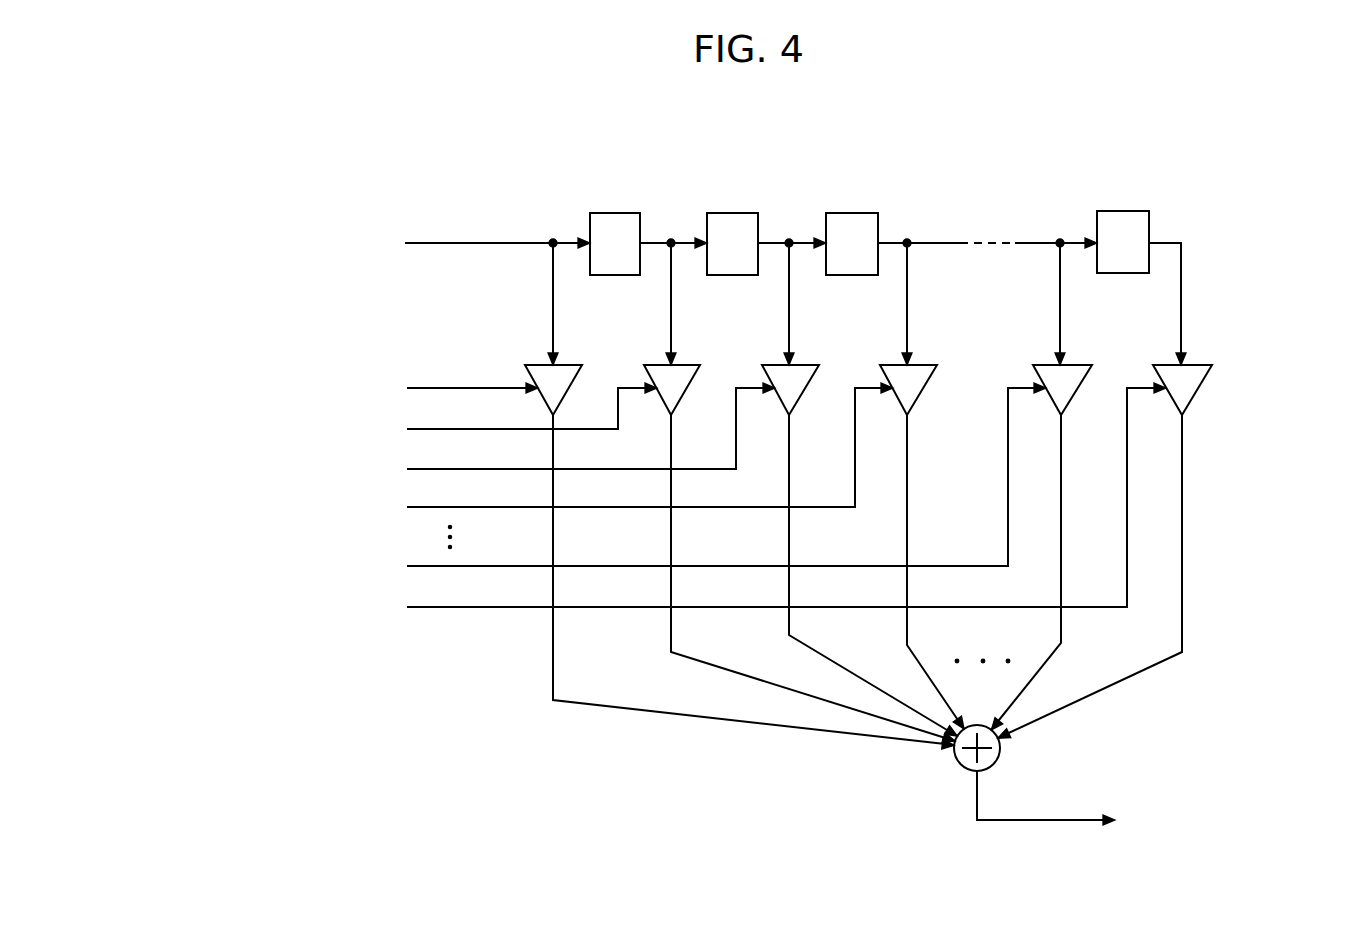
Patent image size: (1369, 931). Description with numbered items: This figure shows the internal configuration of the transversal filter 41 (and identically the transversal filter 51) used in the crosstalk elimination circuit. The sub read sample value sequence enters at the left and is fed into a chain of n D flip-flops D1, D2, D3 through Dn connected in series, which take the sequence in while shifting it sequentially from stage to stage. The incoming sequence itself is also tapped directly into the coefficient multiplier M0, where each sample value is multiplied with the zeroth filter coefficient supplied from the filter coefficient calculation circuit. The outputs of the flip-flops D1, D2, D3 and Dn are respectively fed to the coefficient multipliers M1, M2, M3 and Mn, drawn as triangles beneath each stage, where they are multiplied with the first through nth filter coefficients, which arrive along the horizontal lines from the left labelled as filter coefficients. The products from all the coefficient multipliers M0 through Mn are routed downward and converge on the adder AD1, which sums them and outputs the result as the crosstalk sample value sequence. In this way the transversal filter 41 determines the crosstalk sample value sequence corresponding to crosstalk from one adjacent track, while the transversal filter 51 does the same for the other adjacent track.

The transversal filter 41 is at (648, 128).
The transversal filter 51 is at (733, 512).
The D flip-flop D1 is at (624, 213).
The D flip-flop D2 is at (742, 213).
The D flip-flop D3 is at (861, 213).
The D flip-flop Dn is at (1132, 211).
The coefficient multiplier M0 is at (570, 365).
The coefficient multiplier M1 is at (688, 365).
The coefficient multiplier M2 is at (806, 365).
The coefficient multiplier M3 is at (924, 365).
The coefficient multiplier Mn is at (1199, 365).
The adder AD1 is at (1000, 751).